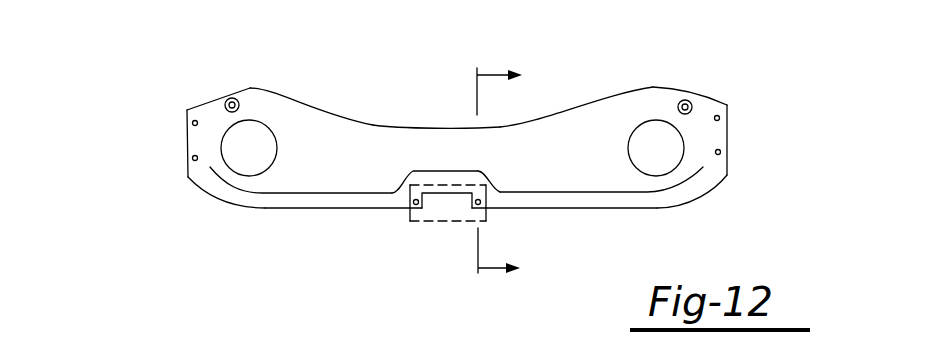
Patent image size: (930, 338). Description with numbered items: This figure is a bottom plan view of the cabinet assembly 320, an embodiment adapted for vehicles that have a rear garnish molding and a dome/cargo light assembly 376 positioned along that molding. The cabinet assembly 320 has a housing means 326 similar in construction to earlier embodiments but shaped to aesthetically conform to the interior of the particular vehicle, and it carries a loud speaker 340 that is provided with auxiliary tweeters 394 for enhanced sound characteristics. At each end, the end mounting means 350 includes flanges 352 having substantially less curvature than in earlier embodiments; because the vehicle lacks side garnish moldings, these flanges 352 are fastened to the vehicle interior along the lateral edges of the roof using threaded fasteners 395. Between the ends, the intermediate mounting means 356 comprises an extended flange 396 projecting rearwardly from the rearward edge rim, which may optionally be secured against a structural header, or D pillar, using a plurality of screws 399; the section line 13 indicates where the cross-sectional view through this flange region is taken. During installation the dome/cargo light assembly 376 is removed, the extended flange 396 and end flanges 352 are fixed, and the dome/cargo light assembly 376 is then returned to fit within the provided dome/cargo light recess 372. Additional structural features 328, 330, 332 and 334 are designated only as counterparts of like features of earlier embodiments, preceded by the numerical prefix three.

The cabinet assembly 320 is at (343, 103).
The housing means 326 is at (319, 210).
The top edge 328 is at (430, 128).
The bend line 330 is at (607, 195).
The plate body 332 is at (588, 133).
The end edge 334 is at (182, 138).
The loud speaker 340 is at (258, 195).
The end mounting means 350 is at (204, 96).
The flanges 352 is at (188, 180).
The intermediate mounting means 356 is at (404, 218).
The dome/cargo light recess 372 is at (495, 193).
The dome/cargo light assembly 376 is at (455, 235).
The auxiliary tweeters 394 is at (239, 100).
The threaded fasteners 395 is at (192, 123).
The extended flange 396 is at (637, 208).
The screws 399 is at (418, 197).
The section line 13- 13 is at (524, 172).